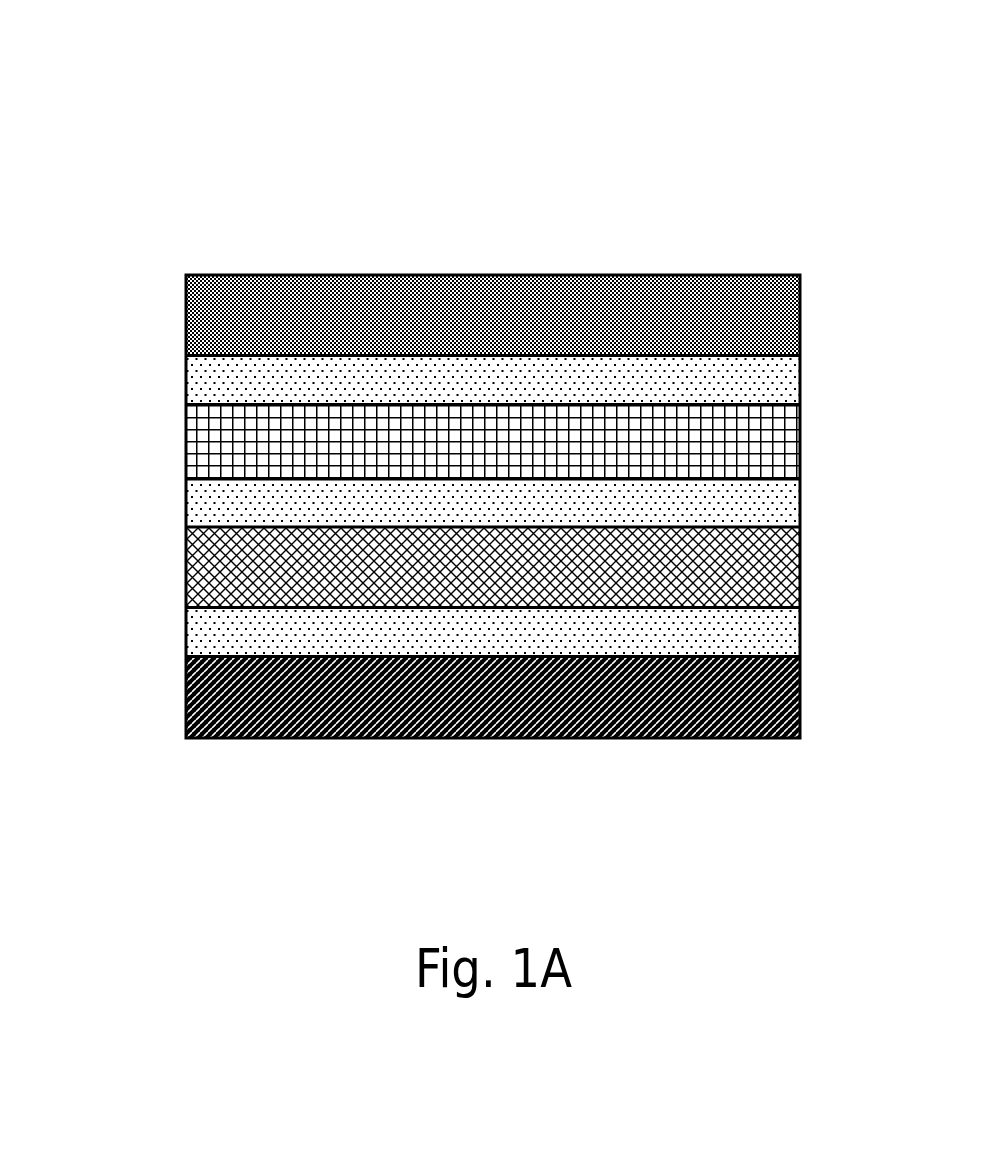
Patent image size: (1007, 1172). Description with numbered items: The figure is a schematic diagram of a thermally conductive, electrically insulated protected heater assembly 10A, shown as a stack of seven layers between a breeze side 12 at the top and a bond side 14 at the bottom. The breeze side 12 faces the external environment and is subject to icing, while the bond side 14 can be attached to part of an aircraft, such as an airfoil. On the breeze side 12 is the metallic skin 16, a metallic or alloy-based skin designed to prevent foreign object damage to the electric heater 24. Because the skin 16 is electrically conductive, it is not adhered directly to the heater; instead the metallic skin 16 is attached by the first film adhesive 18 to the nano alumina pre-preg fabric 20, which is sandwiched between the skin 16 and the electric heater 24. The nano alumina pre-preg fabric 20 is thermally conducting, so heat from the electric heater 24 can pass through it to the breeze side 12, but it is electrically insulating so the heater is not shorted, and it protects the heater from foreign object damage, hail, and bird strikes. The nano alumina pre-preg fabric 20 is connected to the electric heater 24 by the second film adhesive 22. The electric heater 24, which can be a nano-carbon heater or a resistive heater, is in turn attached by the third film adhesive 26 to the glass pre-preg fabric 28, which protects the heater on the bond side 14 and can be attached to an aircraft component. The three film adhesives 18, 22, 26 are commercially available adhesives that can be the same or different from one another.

The thermally conductive, electrically insulated protected heater assembly 10A is at (175, 148).
The breeze side 12 is at (185, 181).
The bond side 14 is at (185, 780).
The metallic skin 16 is at (800, 320).
The first film adhesive 18 is at (800, 380).
The nano alumina pre-preg fabric 20 is at (800, 444).
The second film adhesive 22 is at (800, 500).
The electric heater 24 is at (800, 565).
The third film adhesive 26 is at (800, 630).
The glass pre-preg fabric 28 is at (800, 694).